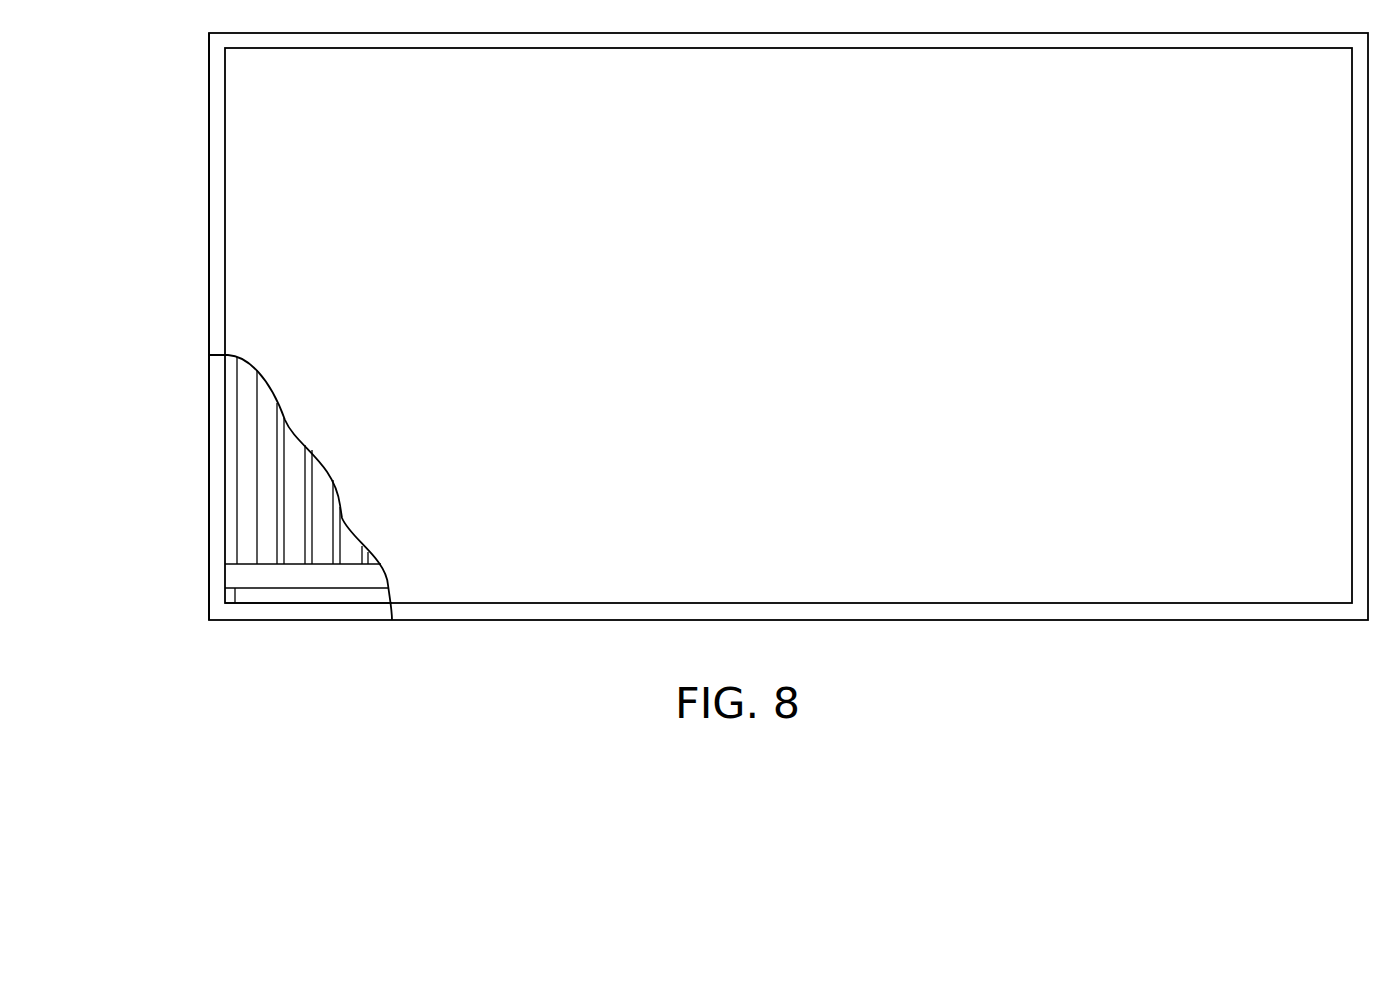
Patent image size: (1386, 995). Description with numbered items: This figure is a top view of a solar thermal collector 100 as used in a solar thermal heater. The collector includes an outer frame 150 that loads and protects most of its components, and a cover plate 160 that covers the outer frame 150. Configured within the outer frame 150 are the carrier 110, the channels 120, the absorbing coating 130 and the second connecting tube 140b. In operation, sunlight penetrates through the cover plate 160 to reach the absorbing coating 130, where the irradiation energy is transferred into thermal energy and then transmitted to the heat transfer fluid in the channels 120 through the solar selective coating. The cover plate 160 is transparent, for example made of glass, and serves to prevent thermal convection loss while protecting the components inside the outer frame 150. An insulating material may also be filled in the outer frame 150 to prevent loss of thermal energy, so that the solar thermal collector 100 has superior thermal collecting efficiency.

The solar thermal collector 100 is at (1351, 673).
The carrier 110 is at (248, 597).
The channels 120 is at (268, 500).
The absorbing coating 130 is at (281, 454).
The second connecting tube 140b is at (258, 573).
The outer frame 150 is at (215, 193).
The cover plate 160 is at (233, 235).